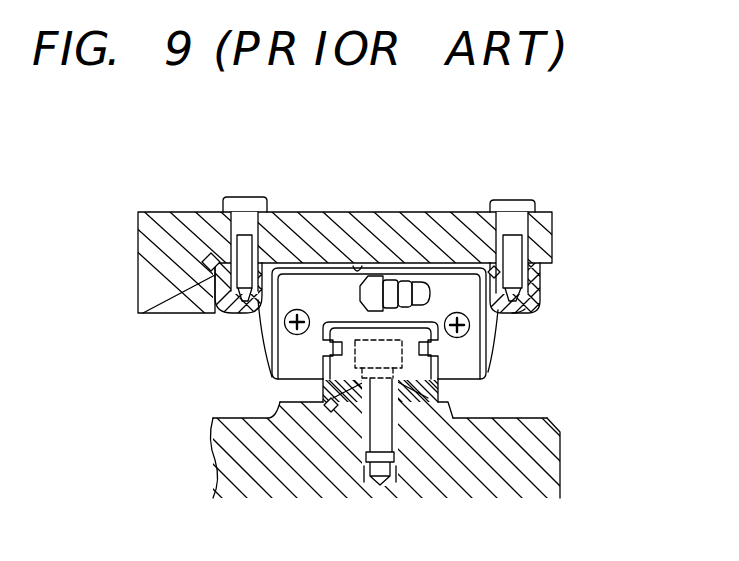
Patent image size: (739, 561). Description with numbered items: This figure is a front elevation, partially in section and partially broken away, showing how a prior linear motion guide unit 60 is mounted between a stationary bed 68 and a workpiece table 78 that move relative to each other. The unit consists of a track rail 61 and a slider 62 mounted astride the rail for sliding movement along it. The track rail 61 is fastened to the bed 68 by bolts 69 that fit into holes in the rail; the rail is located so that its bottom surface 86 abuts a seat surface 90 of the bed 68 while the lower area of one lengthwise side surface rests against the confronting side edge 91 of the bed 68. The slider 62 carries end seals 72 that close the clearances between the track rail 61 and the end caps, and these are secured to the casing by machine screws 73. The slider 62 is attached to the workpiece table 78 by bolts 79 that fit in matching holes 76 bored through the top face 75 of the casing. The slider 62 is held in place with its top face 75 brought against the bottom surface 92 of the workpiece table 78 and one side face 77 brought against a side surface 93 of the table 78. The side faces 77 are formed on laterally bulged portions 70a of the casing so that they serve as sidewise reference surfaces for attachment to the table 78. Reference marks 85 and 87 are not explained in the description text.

The linear motion guide unit 60 is at (365, 277).
The track rail 61 is at (326, 386).
The slider 62 is at (530, 315).
The bed 68 is at (517, 462).
The bolts 69 is at (383, 398).
The laterally bulged portions 70a is at (232, 302).
The end seals 72 is at (465, 365).
The machine screws 73 is at (285, 323).
The top face 75 is at (318, 262).
The holes 76 is at (214, 275).
The side face 77 is at (215, 298).
The workpiece table 78 is at (410, 227).
The bolts 79 is at (246, 203).
The grease nipple 85 is at (417, 288).
The bottom surface 86 is at (502, 422).
The rail seat surface 87 is at (276, 405).
The seat surface 90 is at (352, 418).
The side edge 91 is at (334, 412).
The bottom surface 92 is at (356, 266).
The side surface 93 is at (225, 262).